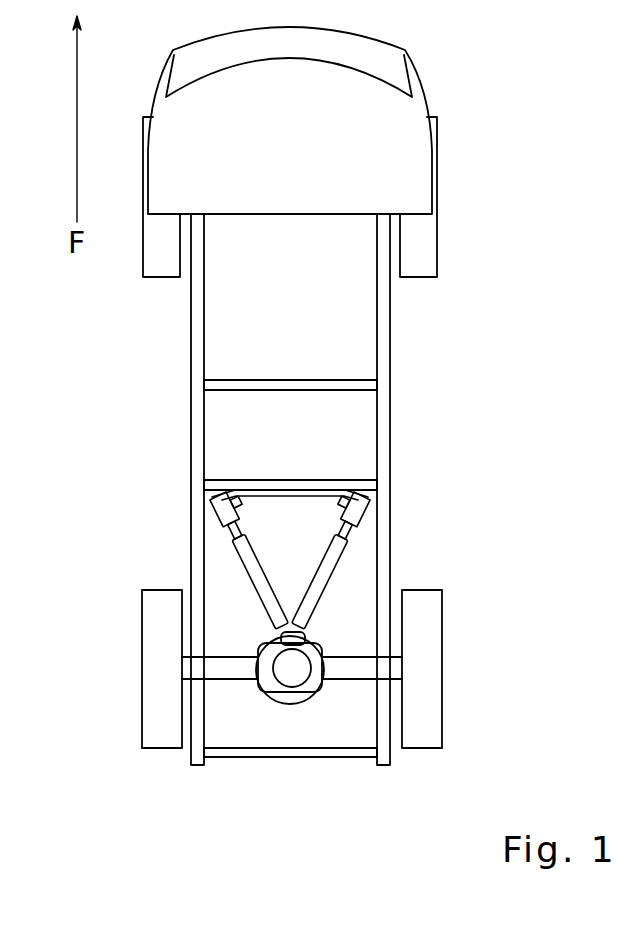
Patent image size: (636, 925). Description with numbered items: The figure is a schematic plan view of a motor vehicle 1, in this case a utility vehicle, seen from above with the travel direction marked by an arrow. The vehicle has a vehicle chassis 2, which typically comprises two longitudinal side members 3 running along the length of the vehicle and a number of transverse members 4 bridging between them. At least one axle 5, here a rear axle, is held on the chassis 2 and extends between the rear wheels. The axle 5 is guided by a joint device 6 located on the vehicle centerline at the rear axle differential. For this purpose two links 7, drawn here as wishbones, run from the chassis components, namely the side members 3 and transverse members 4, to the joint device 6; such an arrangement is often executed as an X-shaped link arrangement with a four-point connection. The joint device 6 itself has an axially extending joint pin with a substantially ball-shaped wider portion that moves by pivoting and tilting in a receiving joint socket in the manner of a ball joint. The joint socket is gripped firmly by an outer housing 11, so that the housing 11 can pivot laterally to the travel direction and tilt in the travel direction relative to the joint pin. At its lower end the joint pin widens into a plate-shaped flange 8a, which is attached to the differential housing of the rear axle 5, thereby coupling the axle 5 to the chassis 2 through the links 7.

The motor vehicle 1 is at (470, 149).
The vehicle chassis 2 is at (382, 422).
The longitudinal side members 3 is at (198, 338).
The transverse members 4 is at (310, 487).
The axle 5 is at (353, 668).
The joint device 6 is at (283, 665).
The links 7 is at (258, 592).
The plate-shaped flange 8a is at (268, 685).
The outer housing 11 is at (297, 677).